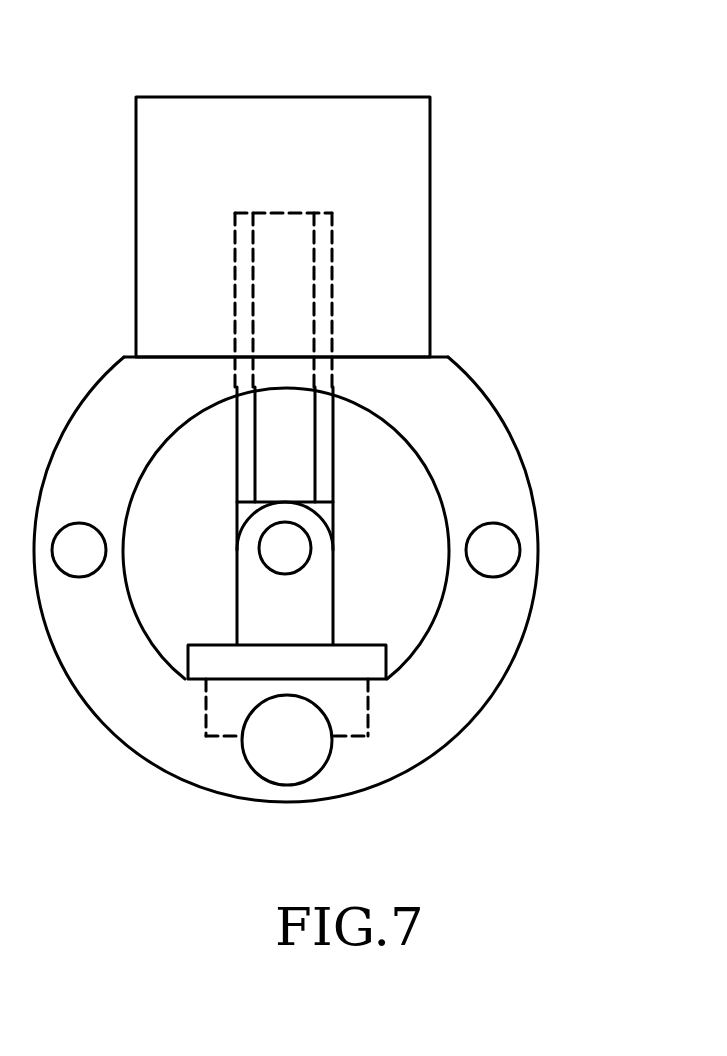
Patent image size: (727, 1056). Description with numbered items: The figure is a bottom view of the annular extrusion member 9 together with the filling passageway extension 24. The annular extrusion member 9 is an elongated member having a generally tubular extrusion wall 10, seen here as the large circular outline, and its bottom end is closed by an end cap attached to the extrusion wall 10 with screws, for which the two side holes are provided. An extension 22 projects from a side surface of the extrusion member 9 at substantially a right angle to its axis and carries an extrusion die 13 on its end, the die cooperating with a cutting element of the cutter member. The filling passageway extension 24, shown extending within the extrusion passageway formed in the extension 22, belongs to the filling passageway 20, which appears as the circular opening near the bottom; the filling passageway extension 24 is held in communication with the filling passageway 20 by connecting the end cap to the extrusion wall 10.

The annular extrusion member 9 is at (491, 379).
The extrusion wall 10 is at (495, 657).
The extrusion die 13 is at (357, 97).
The filling passageway 20 is at (313, 763).
The extension 22 is at (418, 252).
The filling passageway extension 24 is at (245, 473).